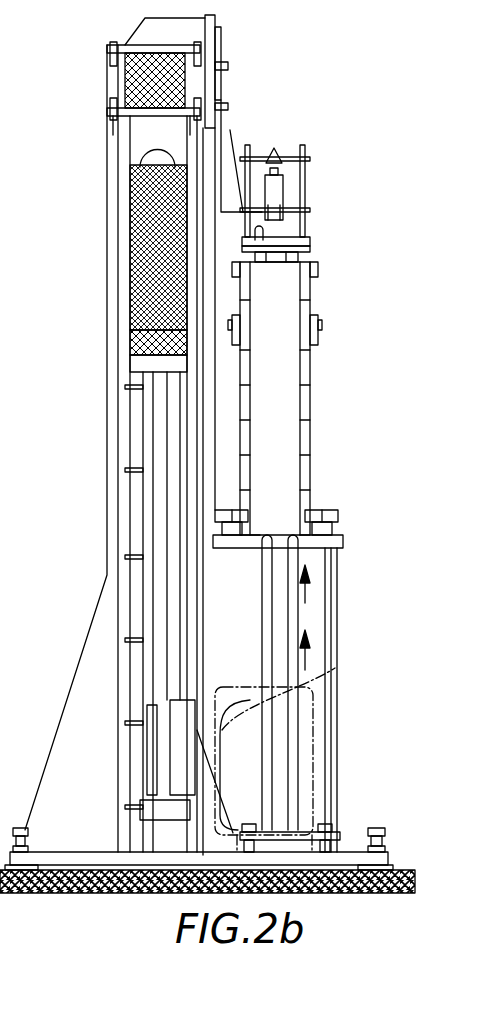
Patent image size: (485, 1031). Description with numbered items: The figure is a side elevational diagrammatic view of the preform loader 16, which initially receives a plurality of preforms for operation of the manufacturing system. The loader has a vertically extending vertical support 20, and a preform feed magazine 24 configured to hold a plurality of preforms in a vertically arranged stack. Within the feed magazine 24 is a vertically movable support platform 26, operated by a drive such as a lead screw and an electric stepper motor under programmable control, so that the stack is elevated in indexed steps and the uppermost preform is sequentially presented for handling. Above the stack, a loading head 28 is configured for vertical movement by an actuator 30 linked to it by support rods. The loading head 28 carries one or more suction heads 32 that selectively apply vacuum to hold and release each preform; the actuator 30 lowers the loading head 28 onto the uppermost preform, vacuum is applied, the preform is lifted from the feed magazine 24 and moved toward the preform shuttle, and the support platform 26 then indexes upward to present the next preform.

The preform loader 16 is at (262, 88).
The vertical support 20 is at (107, 80).
The preform feed magazine 24 is at (313, 377).
The support platform 26 is at (300, 617).
The loading head 28 is at (312, 246).
The actuator 30 is at (286, 183).
The suction head 32 is at (300, 256).